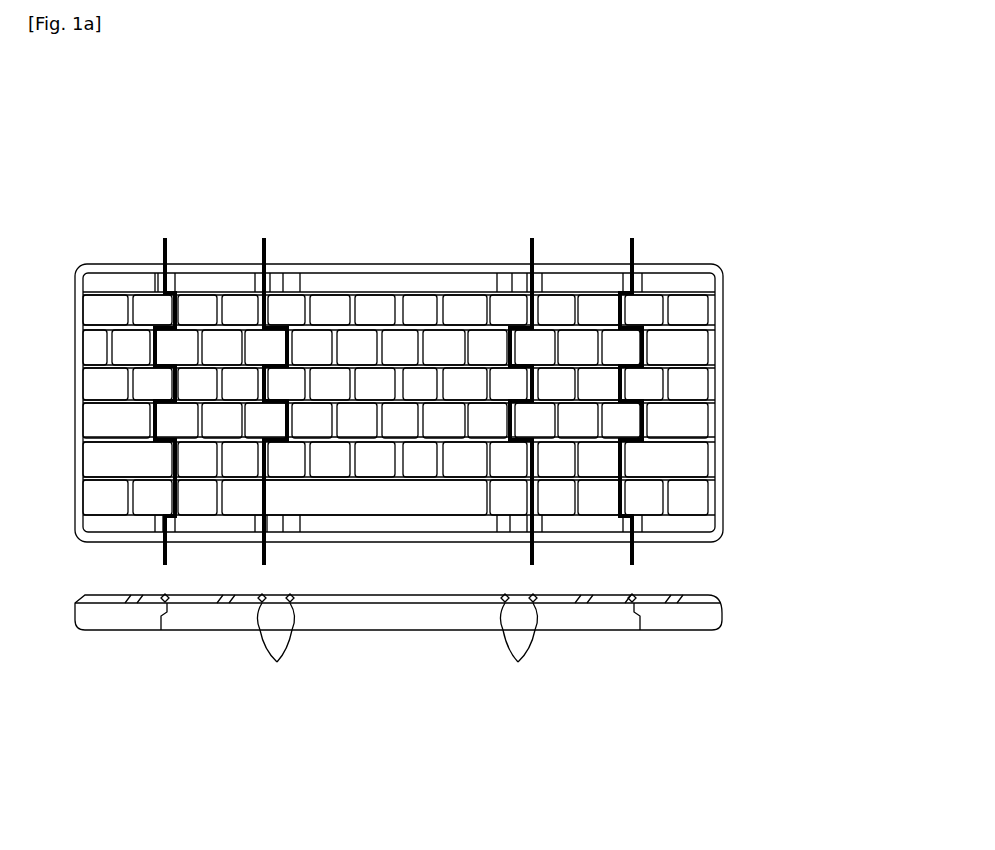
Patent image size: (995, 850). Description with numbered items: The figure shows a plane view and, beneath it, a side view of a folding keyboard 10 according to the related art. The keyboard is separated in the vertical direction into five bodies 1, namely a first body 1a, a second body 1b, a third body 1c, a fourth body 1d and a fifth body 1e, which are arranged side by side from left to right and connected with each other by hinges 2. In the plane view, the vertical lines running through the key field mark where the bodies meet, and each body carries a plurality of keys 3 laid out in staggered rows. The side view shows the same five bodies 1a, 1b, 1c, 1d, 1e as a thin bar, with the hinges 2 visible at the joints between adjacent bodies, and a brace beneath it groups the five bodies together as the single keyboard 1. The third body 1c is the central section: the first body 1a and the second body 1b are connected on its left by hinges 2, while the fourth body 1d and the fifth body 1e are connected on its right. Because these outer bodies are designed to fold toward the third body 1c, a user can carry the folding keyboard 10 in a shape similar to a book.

The folding keyboard 10 is at (745, 200).
The bodies 1 is at (680, 757).
The first body 1a is at (117, 309).
The second body 1b is at (207, 309).
The third body 1c is at (388, 309).
The fourth body 1d is at (580, 309).
The fifth body 1e is at (680, 309).
The hinges 2 is at (168, 606).
The keys 3 is at (466, 306).